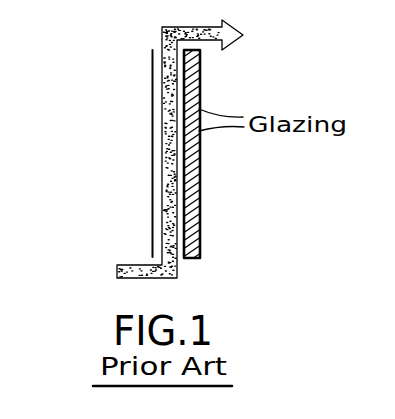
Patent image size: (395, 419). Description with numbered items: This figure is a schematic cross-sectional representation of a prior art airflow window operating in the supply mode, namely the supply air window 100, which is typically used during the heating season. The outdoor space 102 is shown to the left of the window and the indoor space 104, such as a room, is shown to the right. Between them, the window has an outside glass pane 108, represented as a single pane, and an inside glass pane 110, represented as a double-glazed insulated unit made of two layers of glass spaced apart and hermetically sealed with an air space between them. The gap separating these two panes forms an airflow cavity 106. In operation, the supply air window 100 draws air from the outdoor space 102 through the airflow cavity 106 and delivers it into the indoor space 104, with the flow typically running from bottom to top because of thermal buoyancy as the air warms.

The supply air window 100 is at (181, 148).
The outdoor space 102 is at (82, 140).
The indoor space 104 is at (286, 224).
The airflow cavity 106 is at (199, 157).
The outside glass pane 108 is at (153, 170).
The inside glass pane 110 is at (244, 159).